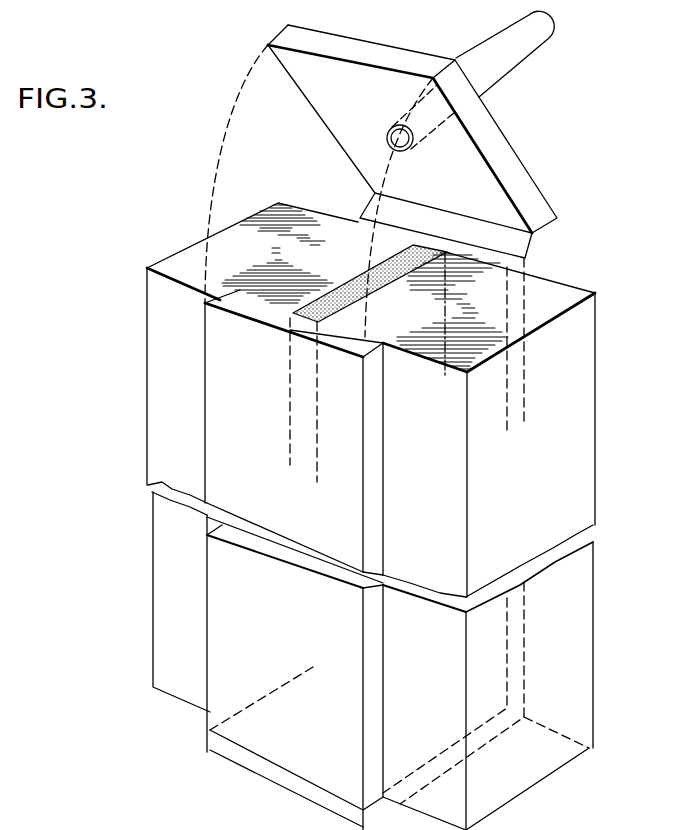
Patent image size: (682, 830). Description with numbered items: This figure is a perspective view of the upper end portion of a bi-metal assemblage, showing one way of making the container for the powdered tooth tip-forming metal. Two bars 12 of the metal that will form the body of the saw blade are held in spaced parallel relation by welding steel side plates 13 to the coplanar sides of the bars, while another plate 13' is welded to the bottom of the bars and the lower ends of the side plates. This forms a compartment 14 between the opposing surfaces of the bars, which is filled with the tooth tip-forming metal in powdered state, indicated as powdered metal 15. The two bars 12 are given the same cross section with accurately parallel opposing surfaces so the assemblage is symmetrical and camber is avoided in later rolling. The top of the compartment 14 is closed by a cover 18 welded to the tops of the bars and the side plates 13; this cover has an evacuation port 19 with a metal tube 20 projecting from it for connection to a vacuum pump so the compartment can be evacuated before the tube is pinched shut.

The bar 12 is at (196, 258).
The side plate 13 is at (370, 348).
The bottom plate 13' is at (372, 661).
The compartment 14 is at (350, 285).
The powdered tooth tip-forming metal 15 is at (313, 323).
The cover 18 is at (513, 163).
The evacuation port 19 is at (387, 135).
The metal tube 20 is at (501, 65).